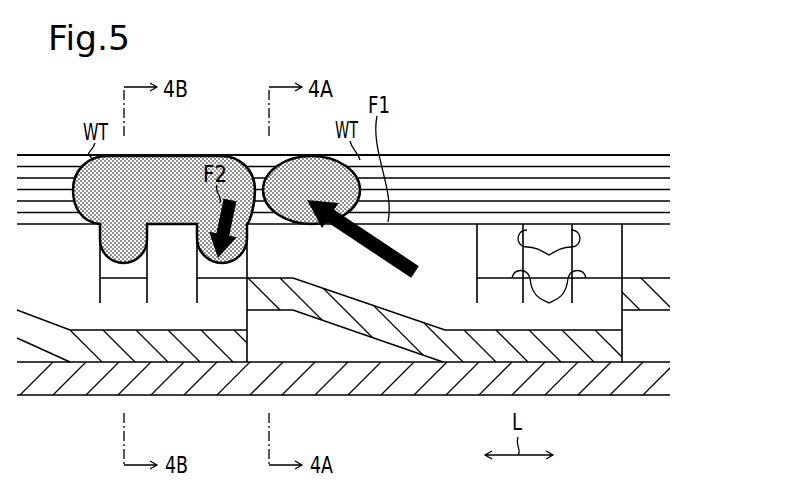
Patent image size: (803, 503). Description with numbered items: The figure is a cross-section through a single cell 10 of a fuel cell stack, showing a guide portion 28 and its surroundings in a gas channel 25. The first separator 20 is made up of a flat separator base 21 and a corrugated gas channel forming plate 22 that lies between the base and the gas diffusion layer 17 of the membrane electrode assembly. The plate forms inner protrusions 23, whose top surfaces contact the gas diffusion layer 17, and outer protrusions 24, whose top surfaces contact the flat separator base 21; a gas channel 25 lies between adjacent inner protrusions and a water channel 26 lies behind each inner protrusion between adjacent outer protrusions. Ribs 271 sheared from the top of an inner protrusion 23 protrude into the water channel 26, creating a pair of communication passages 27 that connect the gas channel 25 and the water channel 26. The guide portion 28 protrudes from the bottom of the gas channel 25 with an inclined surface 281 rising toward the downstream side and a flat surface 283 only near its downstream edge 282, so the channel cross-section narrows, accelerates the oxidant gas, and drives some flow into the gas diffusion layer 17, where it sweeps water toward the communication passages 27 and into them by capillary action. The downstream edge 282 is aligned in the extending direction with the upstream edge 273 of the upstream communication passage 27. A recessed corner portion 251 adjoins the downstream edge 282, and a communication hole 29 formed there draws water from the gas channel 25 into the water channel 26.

The single cell 10 is at (666, 441).
The gas diffusion layer 17 is at (548, 155).
The first separator 20 is at (713, 315).
The flat separator base 21 is at (655, 358).
The gas channel forming plate 22 is at (655, 311).
The inner protrusion 23 is at (455, 222).
The outer protrusion 24 is at (92, 364).
The gas channel 25 is at (40, 251).
The water channel 26 is at (297, 343).
The communication passage 27 is at (198, 240).
The guide portion 28 is at (420, 316).
The communication hole 29 is at (247, 318).
The corner portion 251 is at (213, 322).
The rib 271 is at (208, 275).
The upstream edge 273 is at (240, 268).
The inclined surface 281 is at (367, 300).
The downstream edge 282 is at (240, 292).
The flat surface 283 is at (640, 277).